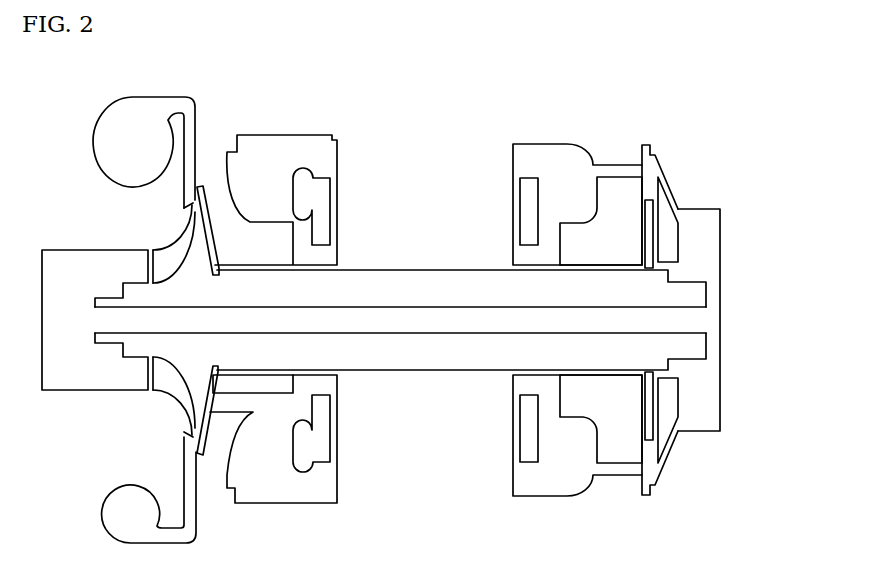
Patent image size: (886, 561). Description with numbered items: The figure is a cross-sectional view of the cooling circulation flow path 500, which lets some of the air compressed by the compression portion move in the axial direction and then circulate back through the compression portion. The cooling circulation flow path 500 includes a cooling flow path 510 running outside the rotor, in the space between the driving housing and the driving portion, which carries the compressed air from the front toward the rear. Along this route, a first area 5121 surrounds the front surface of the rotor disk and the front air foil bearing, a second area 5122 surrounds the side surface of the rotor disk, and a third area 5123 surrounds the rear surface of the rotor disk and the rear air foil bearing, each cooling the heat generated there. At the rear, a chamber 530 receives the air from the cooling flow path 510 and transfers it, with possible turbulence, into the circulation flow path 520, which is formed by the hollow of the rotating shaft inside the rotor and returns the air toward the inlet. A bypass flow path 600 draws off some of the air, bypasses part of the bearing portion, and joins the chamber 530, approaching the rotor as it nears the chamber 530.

The cooling circulation flow path 500 is at (631, 293).
The cooling flow path 510 is at (445, 266).
The circulation flow path 520 is at (380, 307).
The chamber 530 is at (720, 268).
The first area 5121 is at (642, 220).
The second area 5122 is at (680, 130).
The third area 5123 is at (658, 232).
The bypass flow path 600 is at (677, 194).